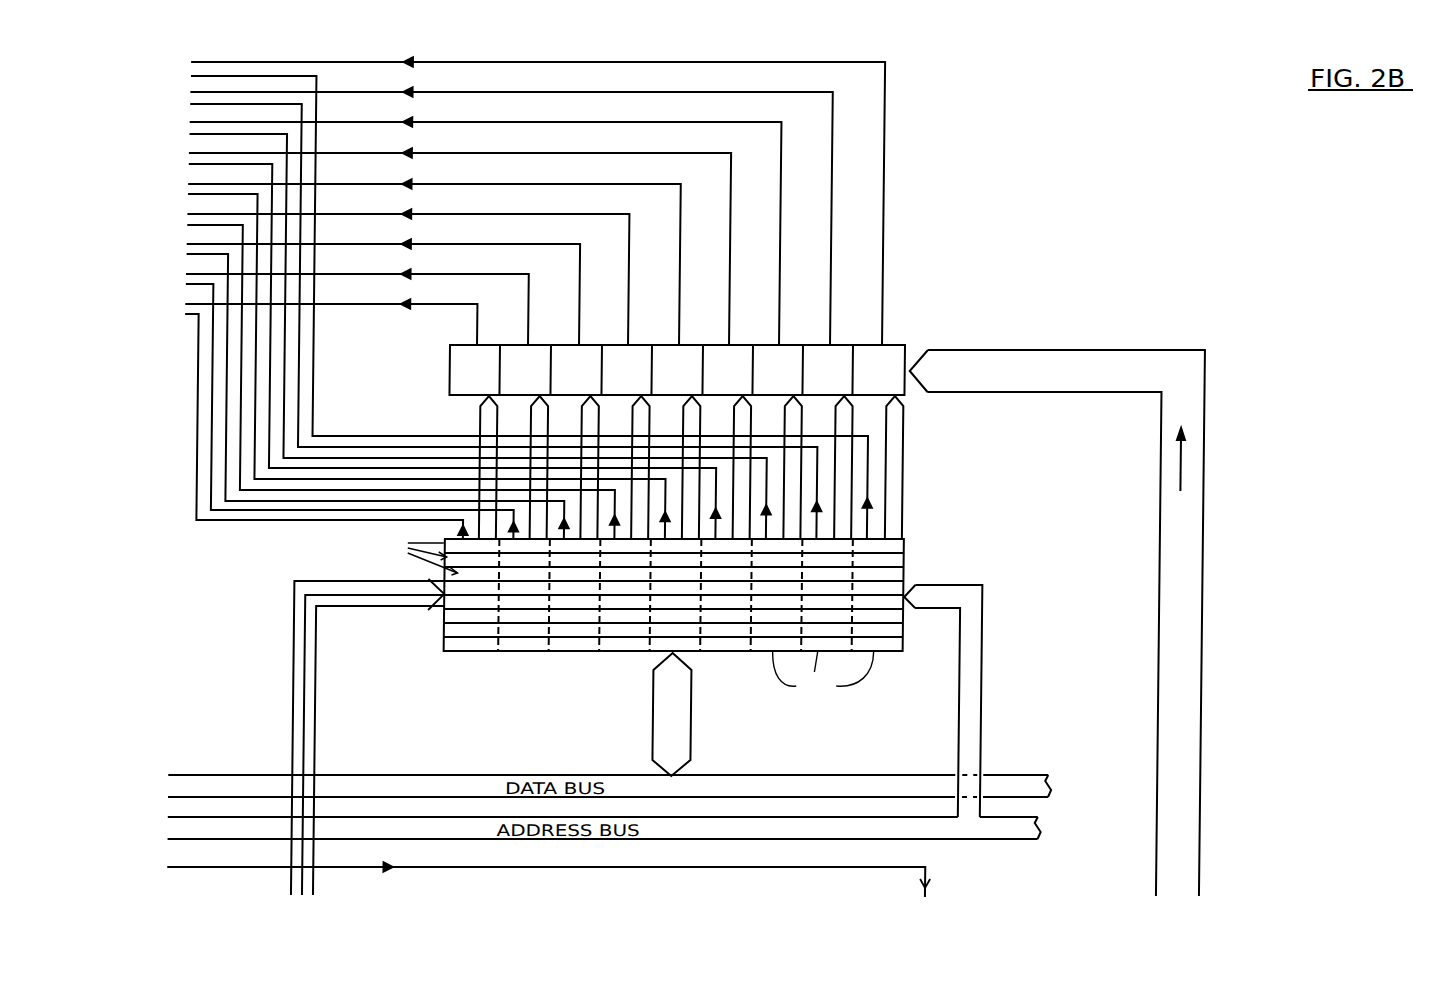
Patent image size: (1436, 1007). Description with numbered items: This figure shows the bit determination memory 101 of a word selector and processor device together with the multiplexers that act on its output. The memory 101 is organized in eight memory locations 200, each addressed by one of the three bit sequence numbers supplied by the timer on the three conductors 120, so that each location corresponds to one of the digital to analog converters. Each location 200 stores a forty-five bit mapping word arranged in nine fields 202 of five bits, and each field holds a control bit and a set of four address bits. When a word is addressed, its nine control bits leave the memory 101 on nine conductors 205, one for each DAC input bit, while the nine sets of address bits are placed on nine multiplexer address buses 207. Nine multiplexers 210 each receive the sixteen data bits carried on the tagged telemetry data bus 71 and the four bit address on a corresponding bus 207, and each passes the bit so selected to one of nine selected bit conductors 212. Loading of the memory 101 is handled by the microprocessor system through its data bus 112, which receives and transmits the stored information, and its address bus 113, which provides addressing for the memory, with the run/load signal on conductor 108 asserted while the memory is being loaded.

The tagged telemetry data bus 71 is at (1067, 348).
The bit determination memory 101 is at (552, 660).
The run/load signal conductor 108 is at (914, 868).
The data bus 112 is at (709, 780).
The address bus 113 is at (979, 605).
The conductors 120 is at (399, 608).
The memory locations 200 is at (417, 557).
The fields 202 is at (822, 674).
The conductors 205 is at (252, 135).
The multiplexer address buses 207 is at (790, 417).
The multiplexers 210 is at (865, 344).
The selected bit conductors 212 is at (698, 123).